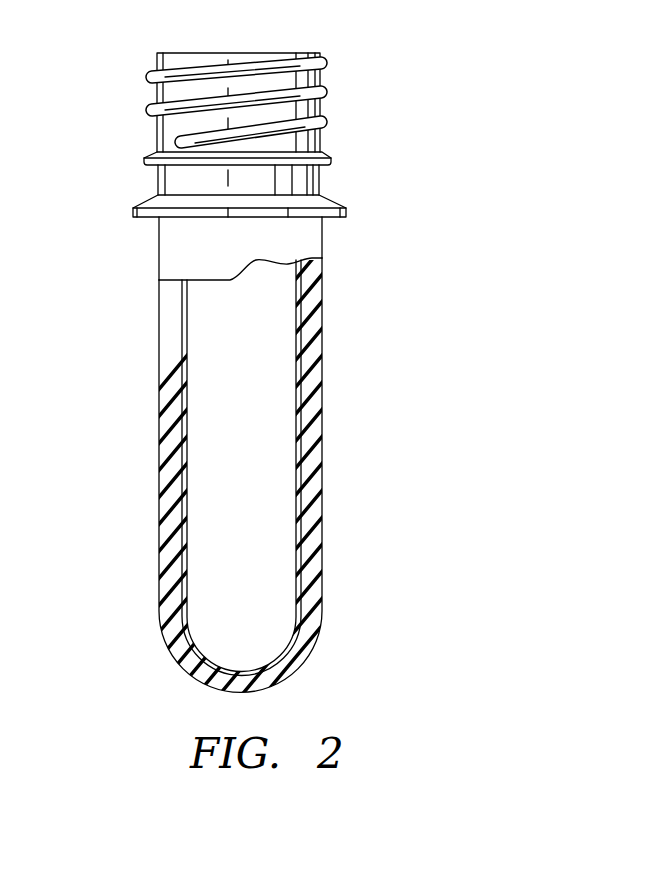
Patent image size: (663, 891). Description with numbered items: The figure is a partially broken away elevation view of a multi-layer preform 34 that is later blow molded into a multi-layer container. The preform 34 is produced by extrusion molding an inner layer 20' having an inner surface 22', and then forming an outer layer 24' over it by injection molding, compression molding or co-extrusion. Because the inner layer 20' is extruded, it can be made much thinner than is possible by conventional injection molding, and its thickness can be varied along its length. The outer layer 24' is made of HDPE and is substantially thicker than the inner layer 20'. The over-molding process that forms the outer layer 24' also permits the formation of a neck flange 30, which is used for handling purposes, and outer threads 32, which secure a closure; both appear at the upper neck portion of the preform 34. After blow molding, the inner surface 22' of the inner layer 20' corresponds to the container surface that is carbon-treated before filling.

The inner layer 20' is at (243, 465).
The inner surface 22' is at (241, 468).
The outer layer 24' is at (257, 495).
The neck flange 30 is at (344, 202).
The outer threads 32 is at (329, 92).
The multi-layer preform 34 is at (380, 430).